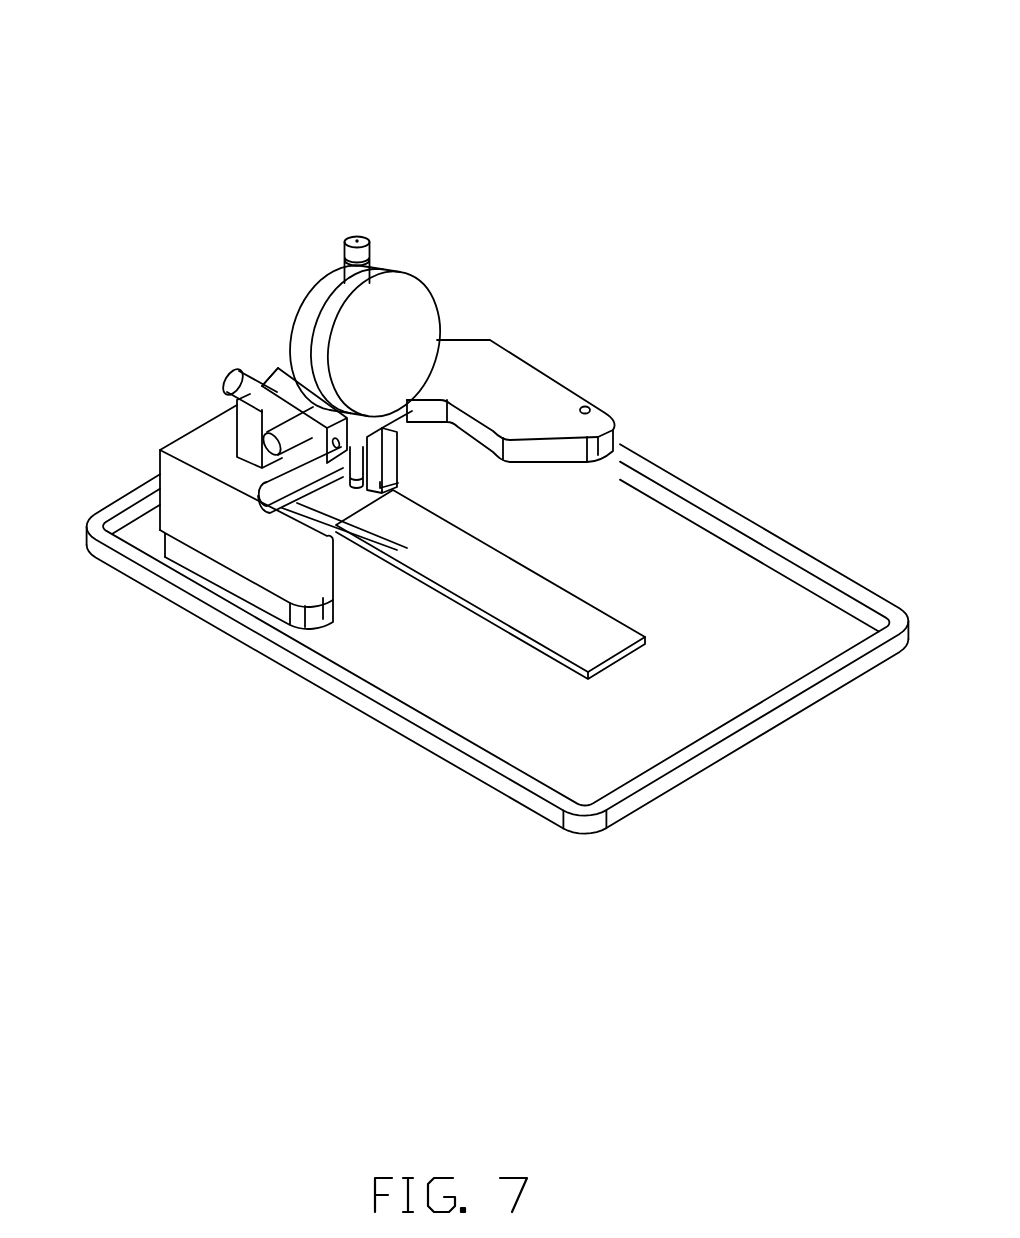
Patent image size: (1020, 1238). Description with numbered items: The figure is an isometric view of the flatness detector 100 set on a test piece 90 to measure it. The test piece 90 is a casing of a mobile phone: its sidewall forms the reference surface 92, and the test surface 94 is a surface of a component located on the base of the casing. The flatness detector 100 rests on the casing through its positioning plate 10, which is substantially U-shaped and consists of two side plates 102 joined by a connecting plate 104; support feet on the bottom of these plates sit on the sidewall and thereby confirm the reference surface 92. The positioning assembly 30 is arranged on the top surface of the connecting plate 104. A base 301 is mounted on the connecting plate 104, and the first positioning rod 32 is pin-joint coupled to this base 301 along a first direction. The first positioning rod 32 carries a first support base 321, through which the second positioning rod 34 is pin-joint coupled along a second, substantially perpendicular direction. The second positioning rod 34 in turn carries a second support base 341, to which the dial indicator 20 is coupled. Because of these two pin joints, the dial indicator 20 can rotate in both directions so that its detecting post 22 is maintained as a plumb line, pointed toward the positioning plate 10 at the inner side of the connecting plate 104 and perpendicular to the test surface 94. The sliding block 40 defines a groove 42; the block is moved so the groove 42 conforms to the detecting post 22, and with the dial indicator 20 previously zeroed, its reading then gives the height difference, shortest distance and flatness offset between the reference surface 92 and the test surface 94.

The flatness detector 100 is at (360, 58).
The positioning plate 10 is at (150, 518).
The side plate 102 is at (218, 540).
The connecting plate 104 is at (207, 438).
The dial indicator 20 is at (400, 278).
The detecting post 22 is at (360, 492).
The positioning assembly 30 is at (195, 380).
The base 301 is at (278, 377).
The first positioning rod 32 is at (237, 373).
The first support base 321 is at (307, 402).
The second positioning rod 34 is at (257, 460).
The second support base 341 is at (390, 432).
The sliding block 40 is at (448, 401).
The groove 42 is at (332, 488).
The test piece 90 is at (725, 585).
The reference surface 92 is at (655, 470).
The test surface 94 is at (347, 503).